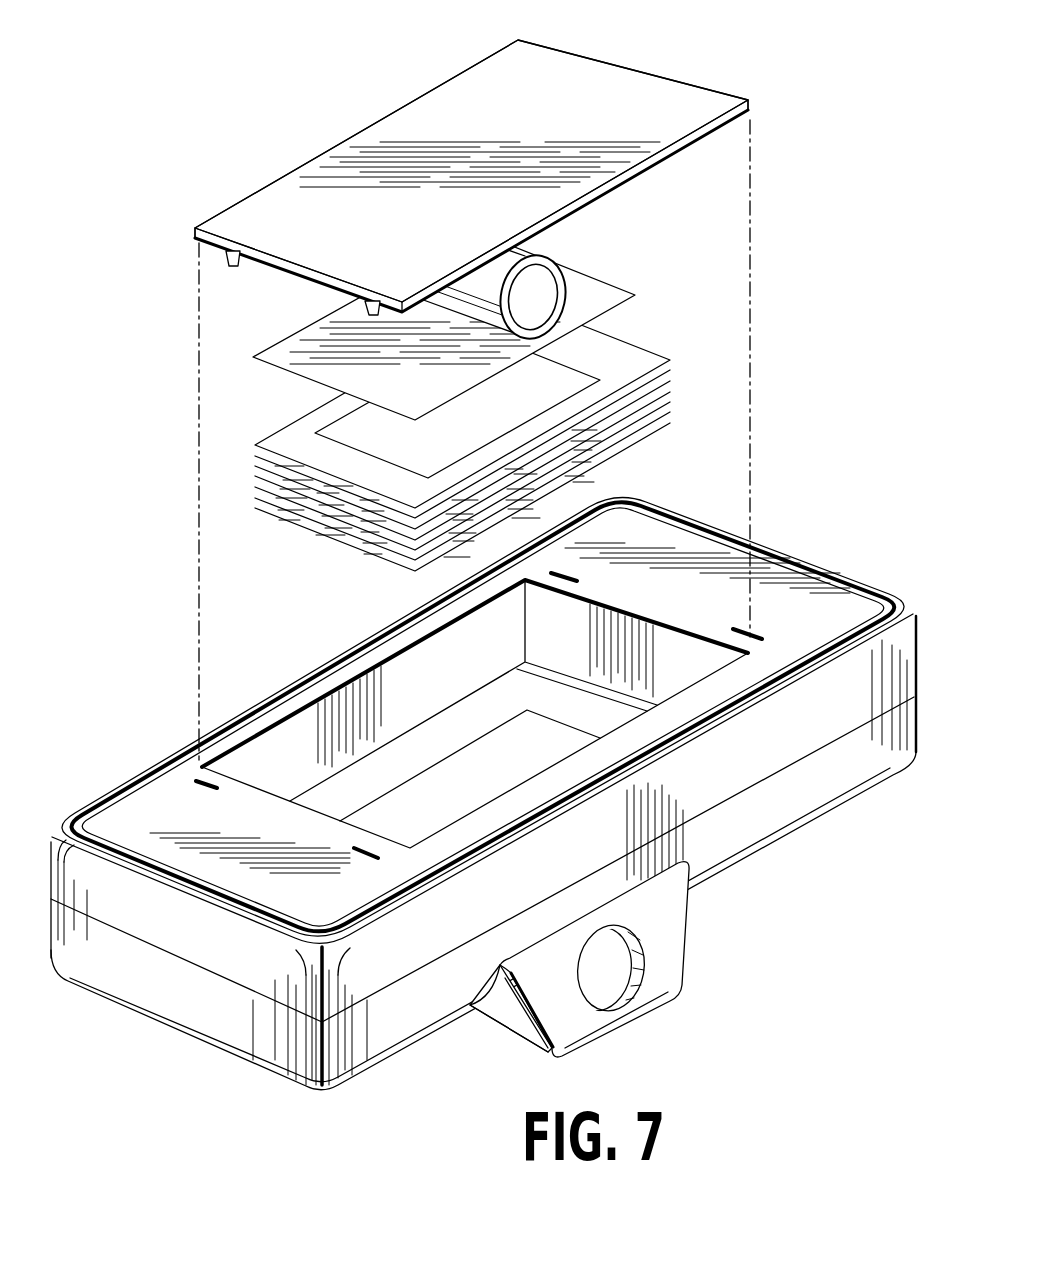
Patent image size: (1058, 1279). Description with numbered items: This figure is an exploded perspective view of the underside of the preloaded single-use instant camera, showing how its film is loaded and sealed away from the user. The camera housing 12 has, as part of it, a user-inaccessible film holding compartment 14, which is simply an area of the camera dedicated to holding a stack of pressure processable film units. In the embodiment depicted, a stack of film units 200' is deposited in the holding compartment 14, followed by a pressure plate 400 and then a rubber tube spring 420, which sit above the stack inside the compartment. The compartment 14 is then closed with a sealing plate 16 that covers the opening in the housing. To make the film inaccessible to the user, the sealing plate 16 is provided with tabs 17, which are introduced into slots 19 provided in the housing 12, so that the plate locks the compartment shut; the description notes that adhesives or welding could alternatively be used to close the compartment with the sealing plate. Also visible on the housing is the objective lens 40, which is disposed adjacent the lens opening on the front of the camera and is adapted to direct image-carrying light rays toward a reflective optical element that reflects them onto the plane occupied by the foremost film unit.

The camera housing 12 is at (914, 748).
The film holding compartment 14 is at (400, 676).
The sealing plate 16 is at (657, 97).
The tabs 17 is at (232, 256).
The slots 19 is at (203, 780).
The objective lens 40 is at (600, 975).
The stack of film units 200' is at (501, 434).
The pressure plate 400 is at (602, 297).
The rubber tube spring 420 is at (564, 272).